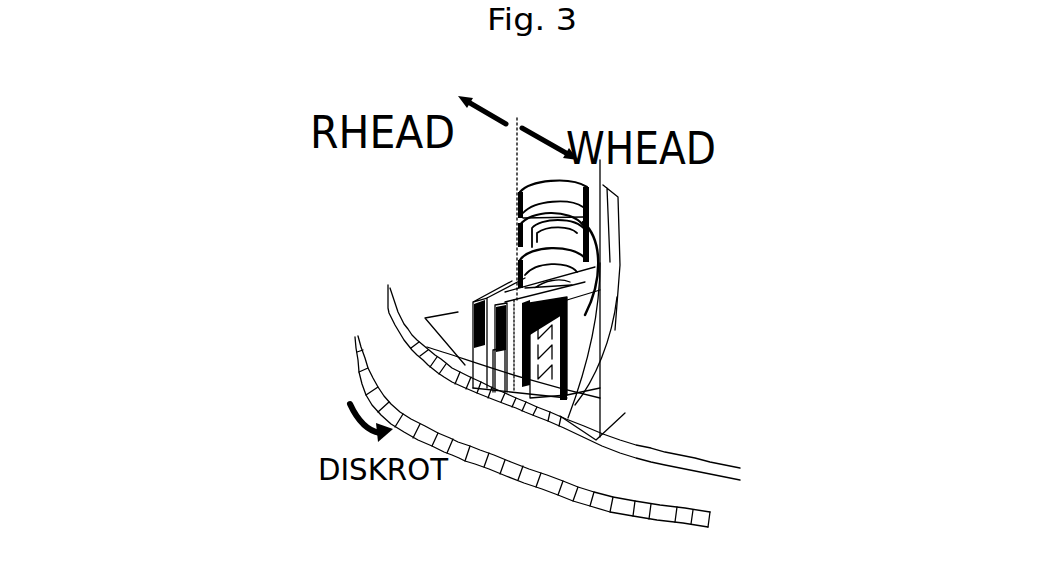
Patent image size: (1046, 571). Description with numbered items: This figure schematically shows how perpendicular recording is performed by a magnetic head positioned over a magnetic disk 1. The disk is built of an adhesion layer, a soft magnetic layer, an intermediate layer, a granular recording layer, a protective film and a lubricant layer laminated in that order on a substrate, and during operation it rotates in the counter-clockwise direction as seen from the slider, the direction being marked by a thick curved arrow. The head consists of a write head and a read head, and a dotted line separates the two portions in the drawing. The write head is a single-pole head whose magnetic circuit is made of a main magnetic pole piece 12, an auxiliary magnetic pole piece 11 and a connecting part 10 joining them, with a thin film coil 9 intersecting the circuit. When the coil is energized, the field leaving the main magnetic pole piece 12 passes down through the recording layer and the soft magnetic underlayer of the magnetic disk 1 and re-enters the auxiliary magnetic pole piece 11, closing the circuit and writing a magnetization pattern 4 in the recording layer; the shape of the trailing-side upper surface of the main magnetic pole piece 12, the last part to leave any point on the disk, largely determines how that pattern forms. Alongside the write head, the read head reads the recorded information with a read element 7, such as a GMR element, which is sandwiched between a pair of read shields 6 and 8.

The magnetic disk 1 is at (530, 490).
The magnetization pattern 4 is at (605, 437).
The read shield 6 is at (492, 303).
The read element 7 is at (458, 312).
The read shield 8 is at (500, 290).
The thin film coil 9 is at (603, 240).
The connecting part 10 is at (604, 277).
The auxiliary magnetic pole piece 11 is at (612, 305).
The main magnetic pole piece 12 is at (600, 373).